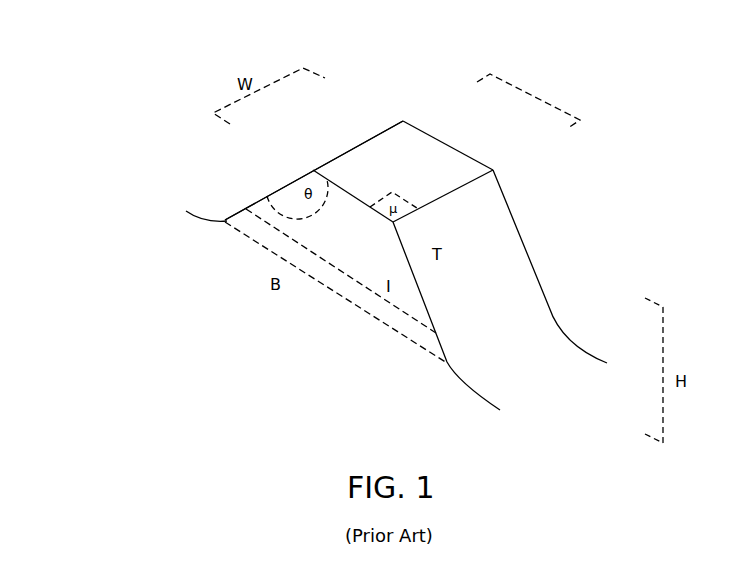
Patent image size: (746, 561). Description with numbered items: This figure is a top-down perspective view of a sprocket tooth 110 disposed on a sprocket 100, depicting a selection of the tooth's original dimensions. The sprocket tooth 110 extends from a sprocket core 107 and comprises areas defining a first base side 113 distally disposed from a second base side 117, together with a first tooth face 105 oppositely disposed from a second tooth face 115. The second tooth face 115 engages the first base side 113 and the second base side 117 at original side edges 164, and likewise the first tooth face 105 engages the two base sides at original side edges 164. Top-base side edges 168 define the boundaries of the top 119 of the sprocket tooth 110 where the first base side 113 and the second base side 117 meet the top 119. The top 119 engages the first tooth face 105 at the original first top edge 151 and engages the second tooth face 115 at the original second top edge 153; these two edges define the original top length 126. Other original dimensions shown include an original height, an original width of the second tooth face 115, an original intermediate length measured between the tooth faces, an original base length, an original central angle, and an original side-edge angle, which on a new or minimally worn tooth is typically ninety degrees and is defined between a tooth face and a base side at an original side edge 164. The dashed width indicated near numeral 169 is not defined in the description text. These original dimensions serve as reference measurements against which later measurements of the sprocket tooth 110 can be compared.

The sprocket 100 is at (113, 174).
The first tooth face 105 is at (283, 177).
The sprocket core 107 is at (288, 352).
The sprocket tooth 110 is at (602, 225).
The first base side 113 is at (386, 264).
The second tooth face 115 is at (498, 337).
The second base side 117 is at (538, 247).
The top 119 is at (411, 174).
The original top length 126 is at (528, 101).
The original first top edge 151 is at (383, 131).
The original second top edge 153 is at (462, 187).
The original side edges 164 is at (253, 202).
The top-base side edges 168 is at (477, 162).
The flange width 169 is at (284, 74).